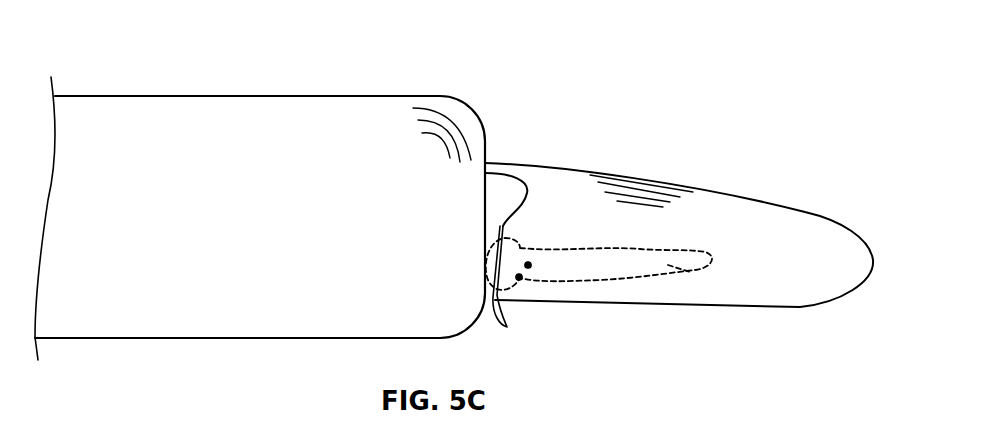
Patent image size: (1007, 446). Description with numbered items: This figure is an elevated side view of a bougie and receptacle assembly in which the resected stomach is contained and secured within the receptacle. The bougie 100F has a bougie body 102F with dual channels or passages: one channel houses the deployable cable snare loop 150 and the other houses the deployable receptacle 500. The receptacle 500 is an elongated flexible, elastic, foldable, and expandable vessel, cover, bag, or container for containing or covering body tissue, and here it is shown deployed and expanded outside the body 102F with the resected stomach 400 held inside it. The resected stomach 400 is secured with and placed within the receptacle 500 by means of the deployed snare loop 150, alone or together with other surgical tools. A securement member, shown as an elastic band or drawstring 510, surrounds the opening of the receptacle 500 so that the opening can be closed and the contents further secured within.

The bougie 100F is at (141, 67).
The bougie body 102F is at (310, 96).
The receptacle 500 is at (805, 212).
The drawstring 510 is at (509, 328).
The resected stomach 400 is at (693, 255).
The cable snare loop 150 is at (527, 278).